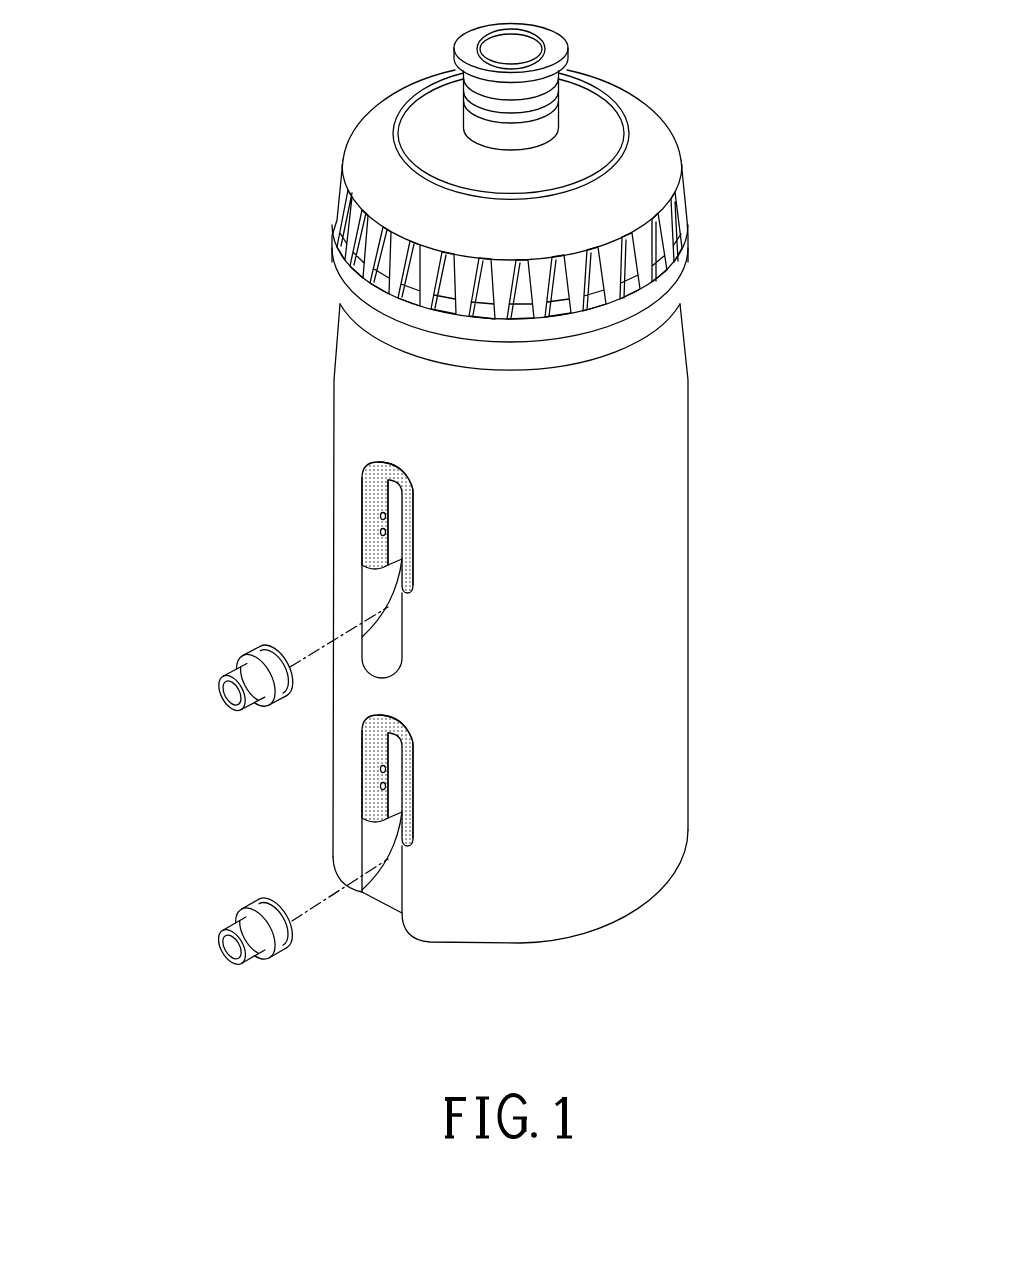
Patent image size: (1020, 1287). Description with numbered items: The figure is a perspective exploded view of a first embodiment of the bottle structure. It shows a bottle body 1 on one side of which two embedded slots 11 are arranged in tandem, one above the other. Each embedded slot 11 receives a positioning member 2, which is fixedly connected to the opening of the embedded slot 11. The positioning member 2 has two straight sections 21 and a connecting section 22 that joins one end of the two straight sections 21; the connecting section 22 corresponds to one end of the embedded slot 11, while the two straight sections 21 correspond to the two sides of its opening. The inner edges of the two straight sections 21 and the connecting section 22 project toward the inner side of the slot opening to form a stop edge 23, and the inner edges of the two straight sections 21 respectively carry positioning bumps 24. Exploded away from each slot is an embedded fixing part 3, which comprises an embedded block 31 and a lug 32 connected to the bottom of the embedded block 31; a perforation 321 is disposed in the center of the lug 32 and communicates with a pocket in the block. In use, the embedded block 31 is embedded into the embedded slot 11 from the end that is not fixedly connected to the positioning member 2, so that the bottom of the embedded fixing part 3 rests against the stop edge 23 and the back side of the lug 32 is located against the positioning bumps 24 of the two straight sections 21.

The bottle body 1 is at (607, 782).
The embedded slot 11 is at (383, 665).
The positioning member 2 is at (297, 624).
The straight sections 21 is at (385, 500).
The connecting section 22 is at (388, 476).
The stop edge 23 is at (364, 586).
The positioning bumps 24 is at (385, 544).
The embedded fixing part 3 is at (243, 846).
The embedded block 31 is at (279, 955).
The lug 32 is at (252, 958).
The perforation 321 is at (229, 948).